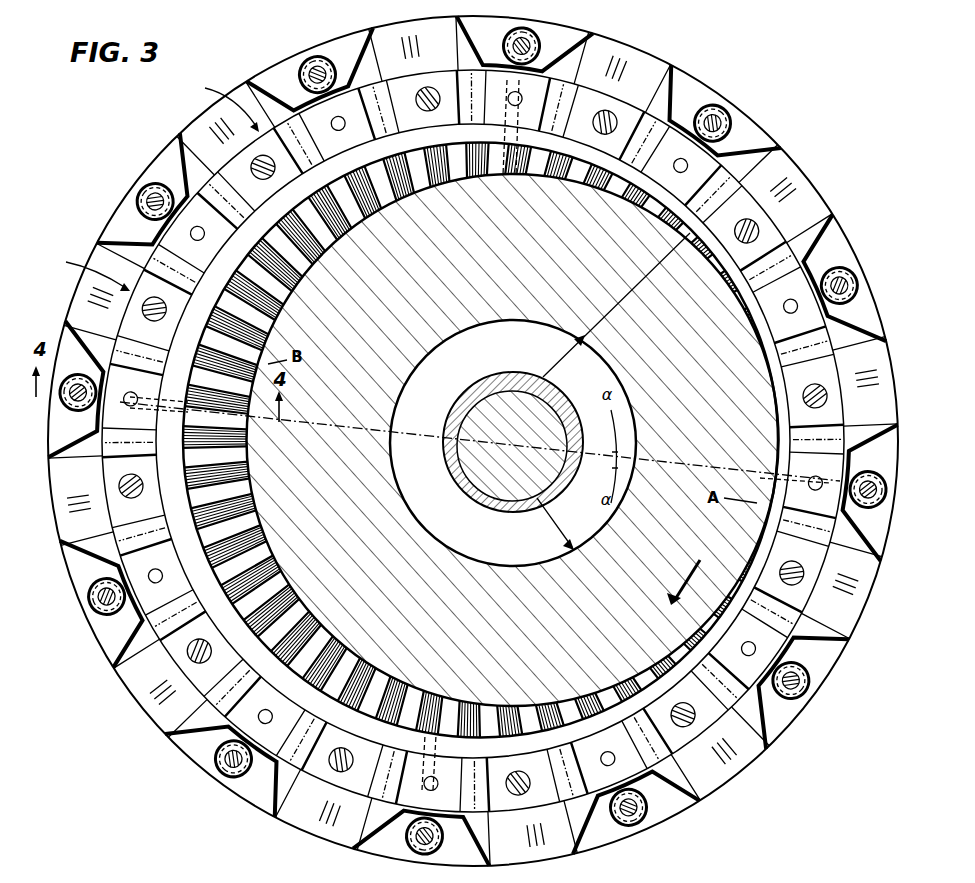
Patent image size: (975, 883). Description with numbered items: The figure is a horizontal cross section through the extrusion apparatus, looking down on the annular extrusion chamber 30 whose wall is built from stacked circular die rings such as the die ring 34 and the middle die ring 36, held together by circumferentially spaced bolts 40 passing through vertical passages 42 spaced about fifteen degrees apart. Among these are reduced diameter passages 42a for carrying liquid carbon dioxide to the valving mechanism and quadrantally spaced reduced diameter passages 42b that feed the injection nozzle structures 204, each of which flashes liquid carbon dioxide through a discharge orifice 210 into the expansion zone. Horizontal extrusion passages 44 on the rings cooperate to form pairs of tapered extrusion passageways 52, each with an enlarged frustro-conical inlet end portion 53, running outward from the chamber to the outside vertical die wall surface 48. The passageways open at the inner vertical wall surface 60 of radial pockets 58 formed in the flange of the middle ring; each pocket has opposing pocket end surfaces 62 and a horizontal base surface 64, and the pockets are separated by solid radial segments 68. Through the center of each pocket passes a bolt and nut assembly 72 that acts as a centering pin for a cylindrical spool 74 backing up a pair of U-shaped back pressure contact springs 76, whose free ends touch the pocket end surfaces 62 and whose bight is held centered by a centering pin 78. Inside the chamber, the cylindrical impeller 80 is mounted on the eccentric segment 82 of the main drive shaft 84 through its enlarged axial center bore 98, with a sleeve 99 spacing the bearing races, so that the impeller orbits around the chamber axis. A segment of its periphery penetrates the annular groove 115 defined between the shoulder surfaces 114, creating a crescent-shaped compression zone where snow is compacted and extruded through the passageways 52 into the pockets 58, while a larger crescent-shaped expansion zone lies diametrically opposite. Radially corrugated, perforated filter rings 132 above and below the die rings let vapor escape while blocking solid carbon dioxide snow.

The annular extrusion chamber 30 is at (190, 560).
The die ring 34 is at (221, 103).
The middle die ring 36 is at (85, 270).
The bolts 40 is at (469, 442).
The vertical passages 42 is at (469, 438).
The reduced diameter passages 42a is at (155, 401).
The reduced diameter passage 42b is at (470, 441).
The extrusion passages 44 is at (189, 331).
The outside vertical die wall surface 48 is at (792, 178).
The extrusion passageways 52 is at (473, 441).
The inlet end portion 53 is at (483, 426).
The radial pockets 58 is at (113, 667).
The inner vertical wall surface 60 is at (99, 371).
The pocket end surfaces 62 is at (473, 441).
The horizontal base surface 64 is at (470, 442).
The solid radial segments 68 is at (472, 439).
The bolt and nut assemblies 72 is at (78, 392).
The spools 74 is at (70, 377).
The back pressure contact springs 76 is at (48, 457).
The centering pin 78 is at (471, 443).
The impeller 80 is at (533, 594).
The eccentric segment 82 is at (512, 474).
The main drive shaft 84 is at (553, 402).
The axial center bore 98 is at (595, 528).
The sleeve 99 is at (446, 438).
The shoulder surfaces 114 is at (463, 144).
The annular groove 115 is at (328, 590).
The filter rings 132 is at (473, 441).
The injection nozzle structure 204 is at (446, 705).
The discharge orifice 210 is at (466, 710).